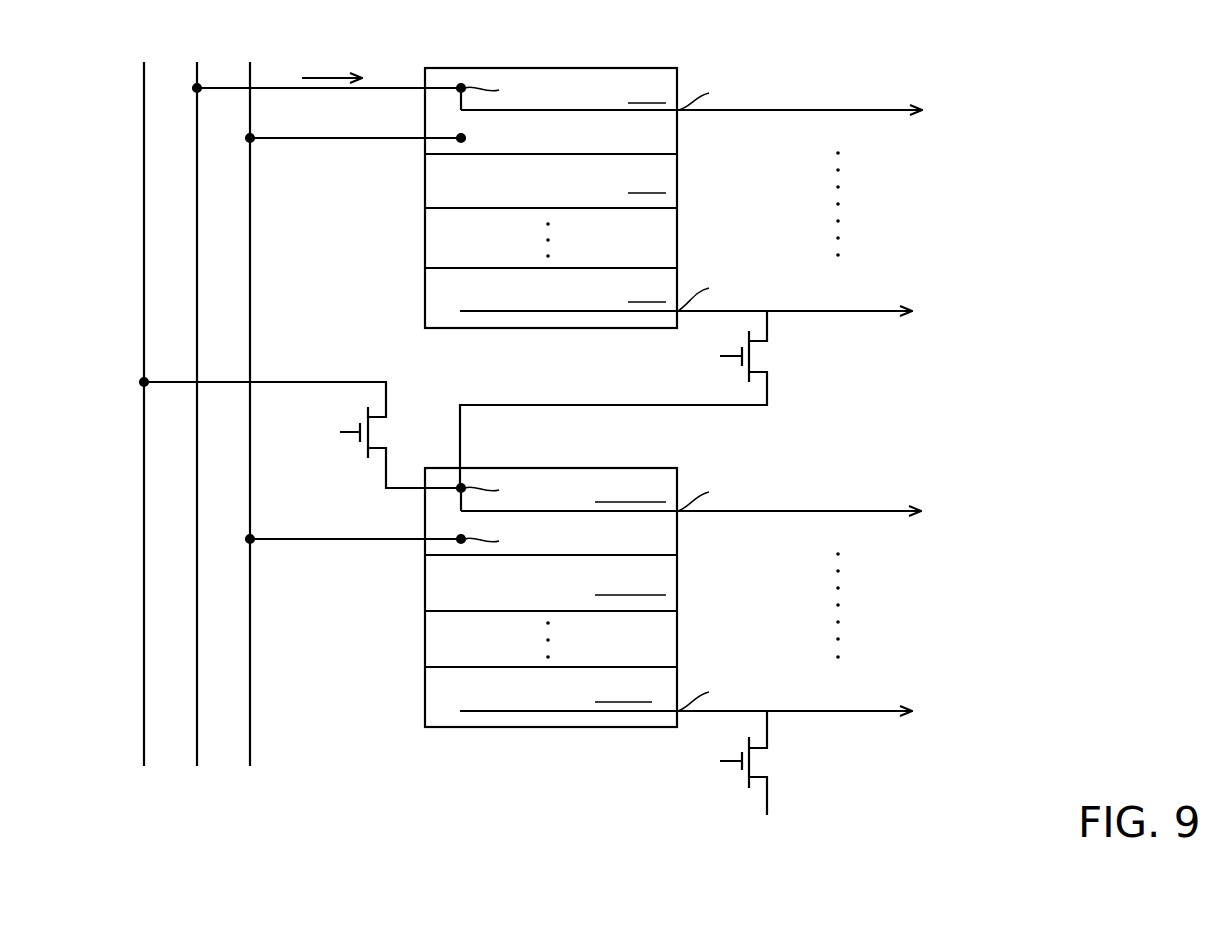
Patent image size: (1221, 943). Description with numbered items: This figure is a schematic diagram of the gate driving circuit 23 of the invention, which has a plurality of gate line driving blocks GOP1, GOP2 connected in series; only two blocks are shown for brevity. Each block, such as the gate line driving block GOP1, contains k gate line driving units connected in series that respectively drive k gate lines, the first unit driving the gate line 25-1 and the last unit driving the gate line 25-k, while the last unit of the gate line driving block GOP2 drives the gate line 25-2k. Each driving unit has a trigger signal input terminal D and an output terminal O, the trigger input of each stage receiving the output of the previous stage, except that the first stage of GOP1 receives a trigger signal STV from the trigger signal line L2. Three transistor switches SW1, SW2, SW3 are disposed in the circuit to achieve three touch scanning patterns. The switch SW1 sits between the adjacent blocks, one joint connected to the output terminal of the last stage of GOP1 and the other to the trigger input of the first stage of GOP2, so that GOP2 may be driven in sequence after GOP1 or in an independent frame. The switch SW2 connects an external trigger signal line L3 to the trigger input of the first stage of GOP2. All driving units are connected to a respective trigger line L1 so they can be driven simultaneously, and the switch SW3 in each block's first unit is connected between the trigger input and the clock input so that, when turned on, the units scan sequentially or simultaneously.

The gate driving circuit 23 is at (887, 37).
The gate line 25-1 is at (727, 94).
The gate line 25-k is at (722, 292).
The 2k-th gate line output 25-2k is at (730, 696).
The gate line driving block GOP1 is at (677, 68).
The gate line driving block GOP2 is at (677, 468).
The switch SW1 is at (613, 399).
The switch SW2 is at (300, 433).
The switch SW3 is at (465, 138).
The trigger signal STV is at (332, 74).
The trigger line L1 is at (252, 435).
The trigger signal line L2 is at (199, 435).
The external trigger signal line L3 is at (146, 435).